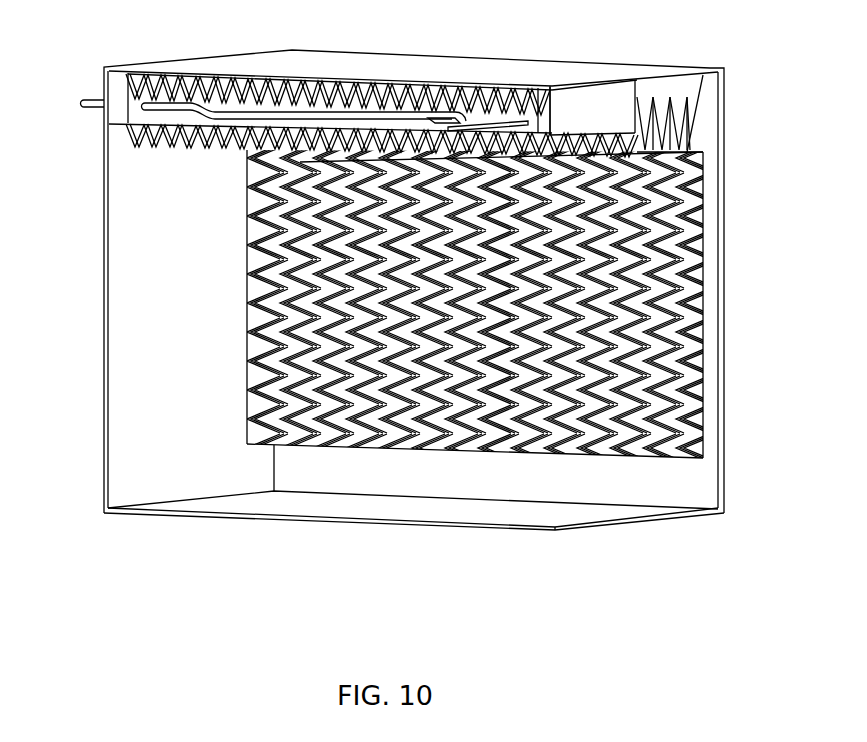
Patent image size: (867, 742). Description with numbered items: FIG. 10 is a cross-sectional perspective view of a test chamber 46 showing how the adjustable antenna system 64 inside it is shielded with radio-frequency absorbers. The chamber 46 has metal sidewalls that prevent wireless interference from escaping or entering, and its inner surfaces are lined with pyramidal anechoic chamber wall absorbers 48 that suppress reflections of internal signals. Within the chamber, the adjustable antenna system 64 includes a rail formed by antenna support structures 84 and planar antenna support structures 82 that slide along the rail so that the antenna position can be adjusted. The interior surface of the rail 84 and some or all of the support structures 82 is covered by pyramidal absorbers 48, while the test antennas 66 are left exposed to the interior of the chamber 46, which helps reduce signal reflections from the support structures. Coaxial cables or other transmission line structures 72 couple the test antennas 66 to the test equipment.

The chamber 46 is at (723, 208).
The pyramidal anechoic chamber wall absorbers 48 is at (167, 147).
The adjustable antenna system 64 is at (88, 138).
The test antennas 66 is at (530, 178).
The transmission line structures 72 is at (93, 100).
The antenna support structures 82 is at (486, 162).
The antenna support structures 84 is at (593, 107).